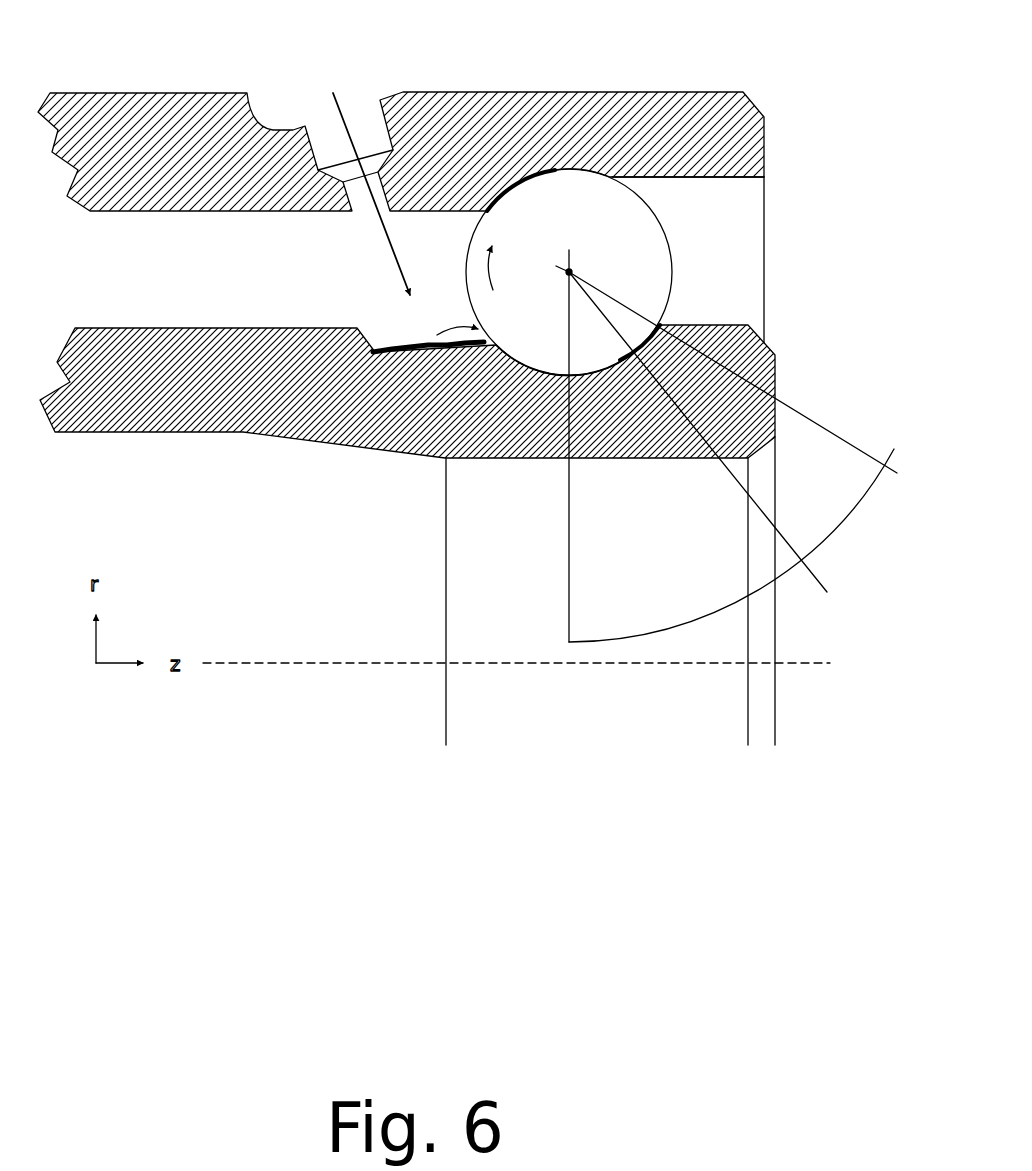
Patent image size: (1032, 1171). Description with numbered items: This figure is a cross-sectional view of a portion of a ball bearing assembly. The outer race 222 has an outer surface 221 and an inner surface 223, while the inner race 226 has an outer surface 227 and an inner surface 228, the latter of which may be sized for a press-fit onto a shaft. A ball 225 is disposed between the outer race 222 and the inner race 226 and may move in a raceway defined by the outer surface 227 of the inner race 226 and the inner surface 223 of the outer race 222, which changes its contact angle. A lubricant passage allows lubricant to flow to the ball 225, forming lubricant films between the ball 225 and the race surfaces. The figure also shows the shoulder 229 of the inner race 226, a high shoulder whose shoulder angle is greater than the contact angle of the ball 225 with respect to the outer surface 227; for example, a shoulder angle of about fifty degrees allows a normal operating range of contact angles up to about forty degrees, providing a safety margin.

The outer surface 221 is at (528, 92).
The outer race 222 is at (510, 152).
The inner surface 223 is at (673, 177).
The ball 225 is at (590, 228).
The inner race 226 is at (482, 412).
The outer surface 227 is at (555, 382).
The inner surface 228 is at (522, 554).
The shoulder 229 is at (662, 328).